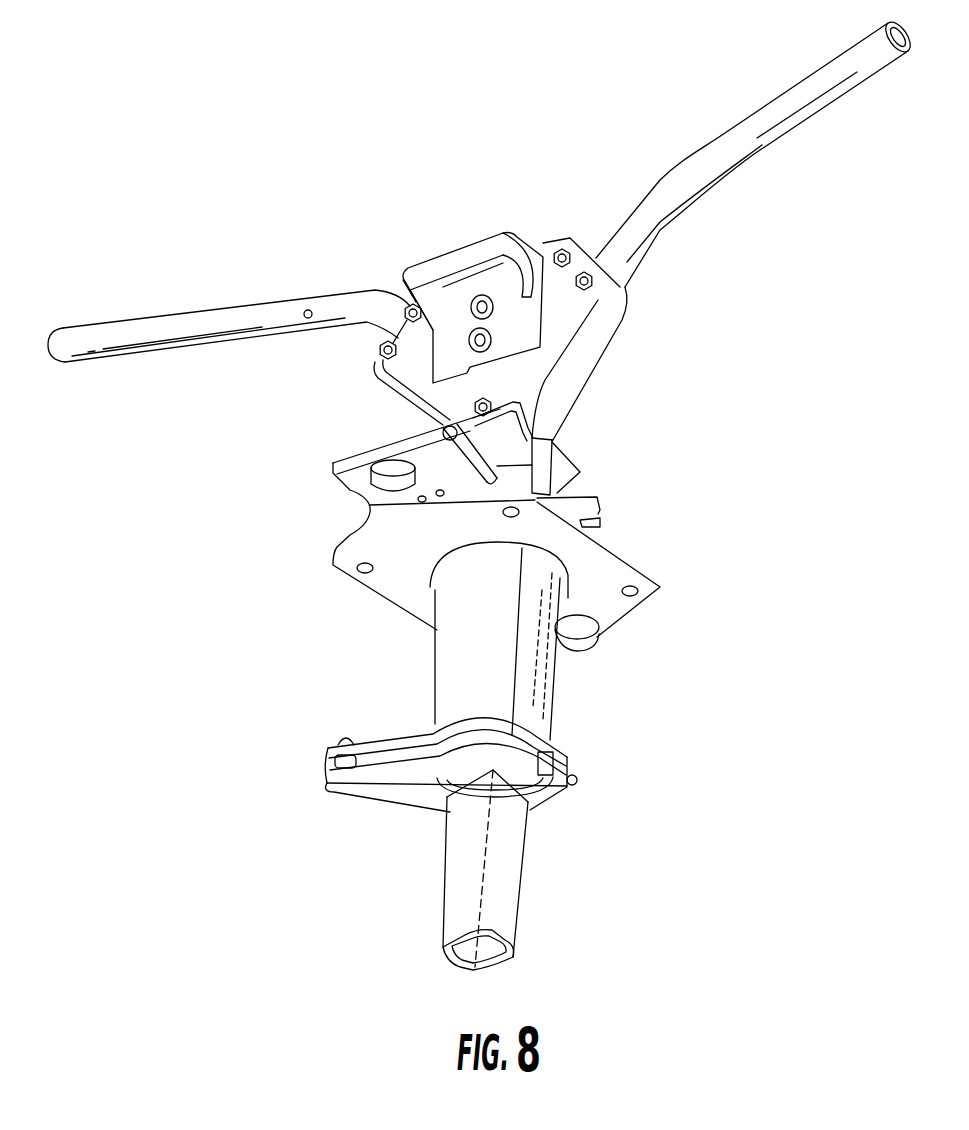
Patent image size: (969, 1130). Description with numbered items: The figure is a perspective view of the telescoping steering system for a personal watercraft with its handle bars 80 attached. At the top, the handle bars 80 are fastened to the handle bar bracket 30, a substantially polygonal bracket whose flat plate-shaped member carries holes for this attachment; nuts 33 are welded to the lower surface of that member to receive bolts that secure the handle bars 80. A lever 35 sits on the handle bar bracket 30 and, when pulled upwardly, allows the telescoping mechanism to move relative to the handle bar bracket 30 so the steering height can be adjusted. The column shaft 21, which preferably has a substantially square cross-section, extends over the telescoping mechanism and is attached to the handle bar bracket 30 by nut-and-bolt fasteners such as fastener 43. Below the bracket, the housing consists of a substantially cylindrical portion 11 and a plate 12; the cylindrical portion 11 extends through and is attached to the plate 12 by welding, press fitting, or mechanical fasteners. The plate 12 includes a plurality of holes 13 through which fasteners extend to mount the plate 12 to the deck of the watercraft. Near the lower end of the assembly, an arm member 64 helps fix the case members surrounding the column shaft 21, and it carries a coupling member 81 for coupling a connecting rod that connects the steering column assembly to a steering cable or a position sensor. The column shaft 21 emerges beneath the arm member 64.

The handle bars 80 is at (63, 362).
The lever 35 is at (470, 247).
The handle bar bracket 30 is at (567, 327).
The nuts 33 is at (407, 303).
The fastener 43 is at (500, 392).
The plate 12 is at (587, 568).
The holes 13 is at (516, 509).
The cylindrical portion 11 is at (540, 695).
The arm member 64 is at (418, 795).
The coupling member 81 is at (346, 736).
The column shaft 21 is at (507, 838).